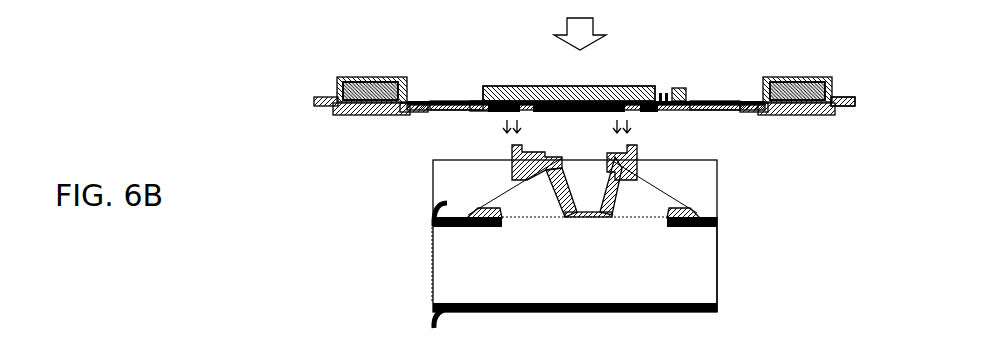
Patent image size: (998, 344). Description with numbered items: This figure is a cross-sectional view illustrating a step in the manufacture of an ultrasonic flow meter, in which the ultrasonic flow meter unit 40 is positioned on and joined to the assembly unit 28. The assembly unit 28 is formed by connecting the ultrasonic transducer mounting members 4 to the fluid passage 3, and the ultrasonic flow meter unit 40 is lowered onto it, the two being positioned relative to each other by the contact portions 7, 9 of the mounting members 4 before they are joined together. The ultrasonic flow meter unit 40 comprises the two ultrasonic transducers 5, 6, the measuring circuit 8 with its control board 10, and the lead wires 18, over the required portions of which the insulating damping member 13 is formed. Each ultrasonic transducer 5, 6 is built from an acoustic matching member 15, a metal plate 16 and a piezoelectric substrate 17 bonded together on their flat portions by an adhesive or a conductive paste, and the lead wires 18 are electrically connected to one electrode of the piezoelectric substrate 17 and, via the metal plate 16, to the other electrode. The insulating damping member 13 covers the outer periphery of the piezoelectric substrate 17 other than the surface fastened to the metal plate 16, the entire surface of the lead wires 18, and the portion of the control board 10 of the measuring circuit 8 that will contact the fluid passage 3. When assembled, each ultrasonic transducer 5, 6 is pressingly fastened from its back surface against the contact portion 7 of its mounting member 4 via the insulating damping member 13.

The fluid passage 3 is at (432, 274).
The ultrasonic transducer mounting member 4 is at (660, 200).
The ultrasonic transducer 5 is at (374, 76).
The ultrasonic transducer 6 is at (792, 76).
The contact portion 7 is at (470, 210).
The measuring circuit 8 is at (596, 87).
The contact portion 9 is at (630, 150).
The control board 10 is at (483, 108).
The insulating damping member 13 is at (363, 79).
The acoustic matching member 15 is at (388, 115).
The metal plate 16 is at (313, 104).
The piezoelectric substrate 17 is at (345, 98).
The lead wire 18 is at (450, 110).
The assembly unit 28 is at (750, 162).
The ultrasonic flow meter unit 40 is at (853, 100).